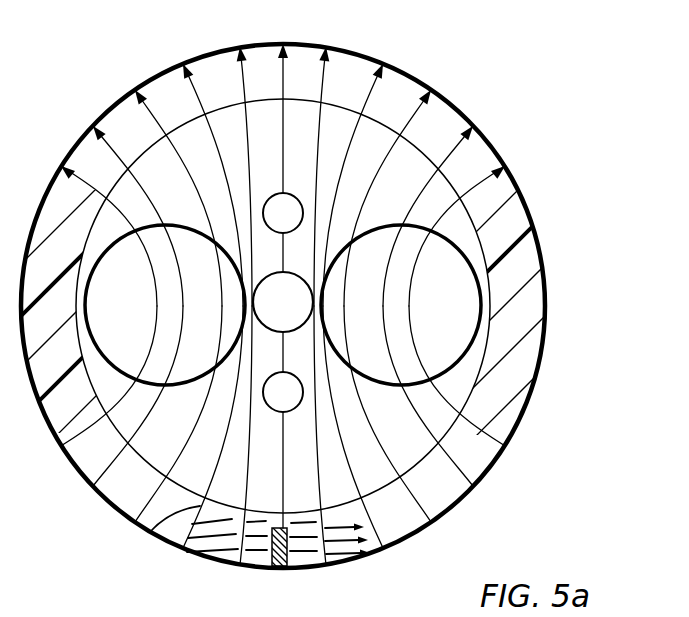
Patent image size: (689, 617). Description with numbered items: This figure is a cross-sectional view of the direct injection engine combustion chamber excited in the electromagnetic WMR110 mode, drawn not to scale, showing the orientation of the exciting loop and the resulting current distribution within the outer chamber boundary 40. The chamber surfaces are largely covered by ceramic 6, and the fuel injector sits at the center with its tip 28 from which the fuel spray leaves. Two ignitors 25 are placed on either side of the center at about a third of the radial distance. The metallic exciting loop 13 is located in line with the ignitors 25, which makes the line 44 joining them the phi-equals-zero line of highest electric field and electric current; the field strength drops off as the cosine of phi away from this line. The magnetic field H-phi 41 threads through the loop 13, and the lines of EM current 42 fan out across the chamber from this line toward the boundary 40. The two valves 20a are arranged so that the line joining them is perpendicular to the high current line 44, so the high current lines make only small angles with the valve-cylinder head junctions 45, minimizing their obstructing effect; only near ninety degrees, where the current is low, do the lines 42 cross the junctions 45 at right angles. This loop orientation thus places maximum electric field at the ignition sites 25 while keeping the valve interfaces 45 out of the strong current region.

The ceramic 6 is at (517, 280).
The metallic EM exciting loop 13 is at (290, 562).
The valves 20a is at (283, 305).
The ignitors 25 is at (283, 302).
The injector tip 28 is at (283, 302).
The outer yoke ring 40 is at (468, 110).
The magnetic field H-phi 41 is at (253, 551).
The lines of EM current 42 is at (150, 533).
The high current line 44 is at (280, 80).
The valve-cylinder head interfaces 45 is at (416, 226).